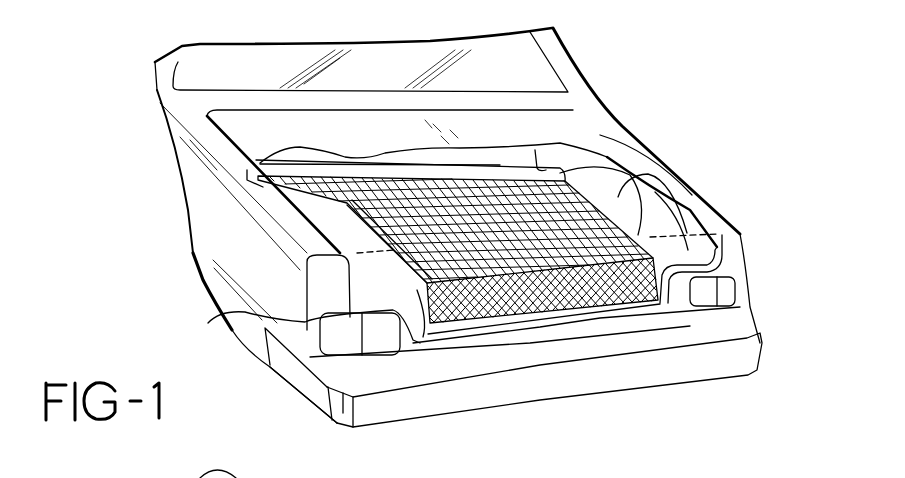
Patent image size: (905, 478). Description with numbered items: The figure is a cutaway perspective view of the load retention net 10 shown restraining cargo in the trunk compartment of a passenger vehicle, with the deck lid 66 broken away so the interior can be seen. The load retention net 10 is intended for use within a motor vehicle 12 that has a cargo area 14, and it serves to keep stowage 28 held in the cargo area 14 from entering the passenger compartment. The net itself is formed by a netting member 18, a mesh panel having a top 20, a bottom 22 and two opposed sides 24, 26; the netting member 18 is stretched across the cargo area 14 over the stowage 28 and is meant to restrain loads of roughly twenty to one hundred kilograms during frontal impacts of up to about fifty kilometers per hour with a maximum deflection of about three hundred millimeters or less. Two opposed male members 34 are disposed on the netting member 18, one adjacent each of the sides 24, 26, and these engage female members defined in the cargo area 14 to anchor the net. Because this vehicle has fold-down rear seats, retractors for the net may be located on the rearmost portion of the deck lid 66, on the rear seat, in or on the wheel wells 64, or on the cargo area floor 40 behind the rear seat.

The load retention net 10 is at (647, 225).
The motor vehicle 12 is at (203, 192).
The cargo area 14 is at (210, 321).
The netting member 18 is at (481, 300).
The top 20 is at (367, 220).
The bottom 22 is at (540, 287).
The side 24 is at (350, 232).
The side 26 is at (570, 187).
The stowage 28 is at (303, 268).
The male member 34 is at (248, 178).
The cargo area floor 40 is at (527, 167).
The wheel well 64 is at (613, 200).
The deck lid 66 is at (373, 114).